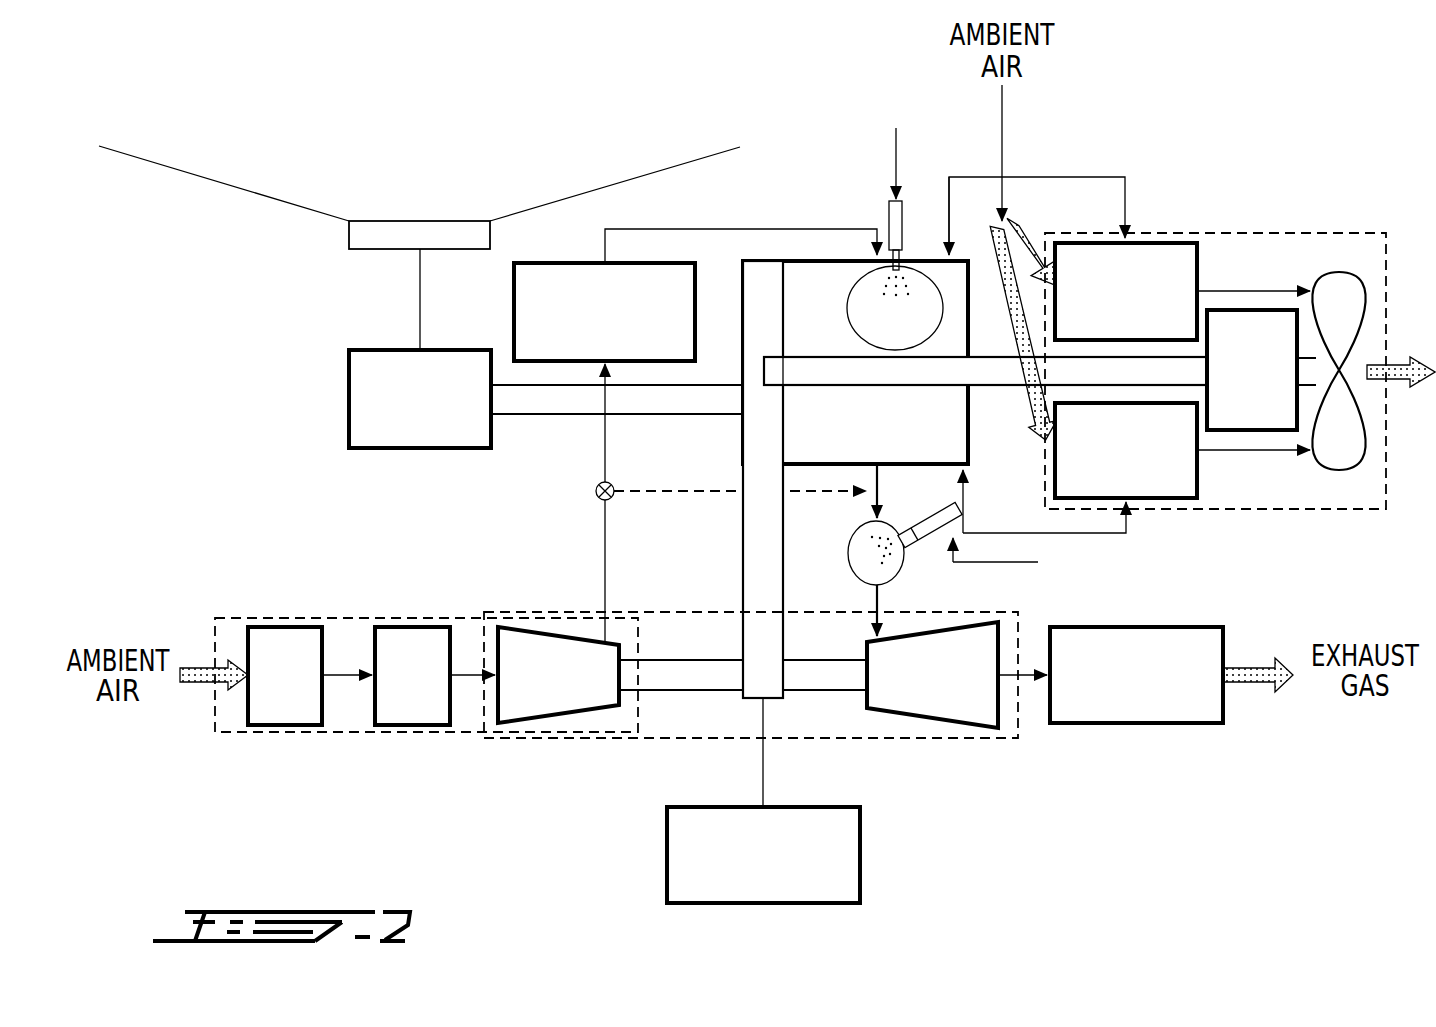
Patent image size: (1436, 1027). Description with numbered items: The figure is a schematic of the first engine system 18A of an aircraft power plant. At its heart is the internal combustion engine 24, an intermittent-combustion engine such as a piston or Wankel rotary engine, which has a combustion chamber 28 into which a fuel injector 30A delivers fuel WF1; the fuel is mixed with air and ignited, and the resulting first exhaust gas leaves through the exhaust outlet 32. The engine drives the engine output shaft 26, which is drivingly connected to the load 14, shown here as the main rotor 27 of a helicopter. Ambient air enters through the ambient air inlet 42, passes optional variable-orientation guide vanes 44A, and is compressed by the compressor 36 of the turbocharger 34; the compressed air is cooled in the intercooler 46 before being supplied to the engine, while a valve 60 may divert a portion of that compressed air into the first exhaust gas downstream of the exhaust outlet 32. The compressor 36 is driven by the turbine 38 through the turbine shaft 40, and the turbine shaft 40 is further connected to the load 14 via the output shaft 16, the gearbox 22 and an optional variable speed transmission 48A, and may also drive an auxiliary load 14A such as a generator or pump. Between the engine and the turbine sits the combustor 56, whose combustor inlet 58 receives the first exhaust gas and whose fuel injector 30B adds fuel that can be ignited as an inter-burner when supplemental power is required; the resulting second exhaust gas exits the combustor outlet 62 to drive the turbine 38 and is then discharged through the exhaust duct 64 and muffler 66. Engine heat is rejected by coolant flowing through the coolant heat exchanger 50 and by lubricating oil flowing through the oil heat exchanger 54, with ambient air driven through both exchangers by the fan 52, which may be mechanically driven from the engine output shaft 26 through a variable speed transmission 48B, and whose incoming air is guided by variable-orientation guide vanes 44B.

The main rotor 27 is at (418, 221).
The load 14 is at (349, 397).
The output shaft 16 is at (551, 418).
The intercooler 46 is at (514, 300).
The gearbox 22 is at (757, 300).
The engine output shaft 26 is at (798, 370).
The internal combustion engine 24 is at (800, 445).
The combustion chamber 28 is at (882, 337).
The fuel injector 30A is at (895, 213).
The first engine system 18A is at (1062, 140).
The coolant heat exchanger 50 is at (1165, 240).
The fan 52 is at (1340, 297).
The oil heat exchanger 54 is at (1197, 476).
The variable-orientation guide vanes 44B is at (1275, 367).
The variable speed transmission 48B is at (1275, 400).
The exhaust outlet 32 is at (877, 468).
The combustor inlet 58 is at (875, 513).
The combustor 56 is at (865, 548).
The combustor outlet 62 is at (877, 590).
The fuel injector 30B is at (930, 532).
The valve 60 is at (596, 496).
The variable speed transmission 48A is at (757, 592).
The ambient air inlet 42 is at (270, 693).
The variable-orientation guide vanes 44A is at (435, 688).
The compressor 36 is at (553, 708).
The turbine shaft 40 is at (822, 675).
The turbocharger 34 is at (912, 740).
The turbine 38 is at (970, 708).
The exhaust duct 64 is at (1102, 688).
The muffler 66 is at (1136, 675).
The auxiliary load 14A is at (667, 850).